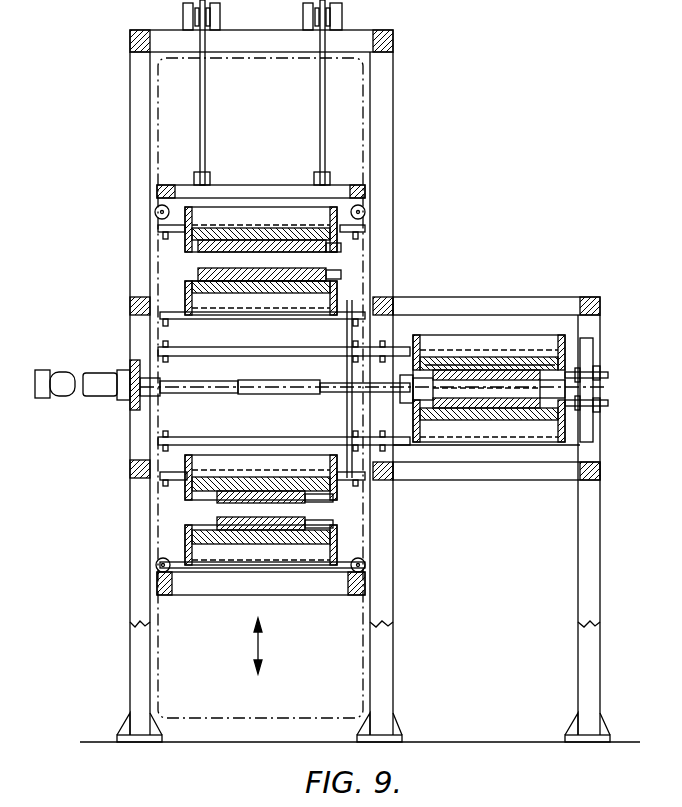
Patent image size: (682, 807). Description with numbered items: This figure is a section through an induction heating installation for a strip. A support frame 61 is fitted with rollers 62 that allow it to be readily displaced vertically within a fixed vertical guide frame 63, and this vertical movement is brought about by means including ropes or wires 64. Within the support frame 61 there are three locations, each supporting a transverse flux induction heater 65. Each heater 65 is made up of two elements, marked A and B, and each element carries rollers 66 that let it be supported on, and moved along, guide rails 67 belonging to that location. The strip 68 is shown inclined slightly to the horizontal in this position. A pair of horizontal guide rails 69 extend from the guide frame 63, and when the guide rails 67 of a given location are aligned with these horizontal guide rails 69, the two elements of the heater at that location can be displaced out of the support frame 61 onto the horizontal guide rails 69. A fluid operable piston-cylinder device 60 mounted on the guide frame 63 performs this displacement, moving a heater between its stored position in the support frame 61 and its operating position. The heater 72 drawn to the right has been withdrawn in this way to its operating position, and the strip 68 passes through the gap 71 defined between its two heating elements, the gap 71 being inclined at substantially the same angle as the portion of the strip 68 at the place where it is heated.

The fluid operable piston-cylinder device 60 is at (60, 397).
The support frame 61 is at (170, 508).
The rollers 62 is at (155, 211).
The vertical guide frame 63 is at (394, 206).
The ropes or wires 64 is at (320, 115).
The transverse flux induction heater 65 is at (205, 260).
The rollers 66 is at (320, 197).
The guide rails 67 is at (165, 468).
The strip 68 is at (476, 392).
The horizontal guide rails 69 is at (573, 350).
The gap 71 is at (415, 388).
The heater 72 is at (478, 348).